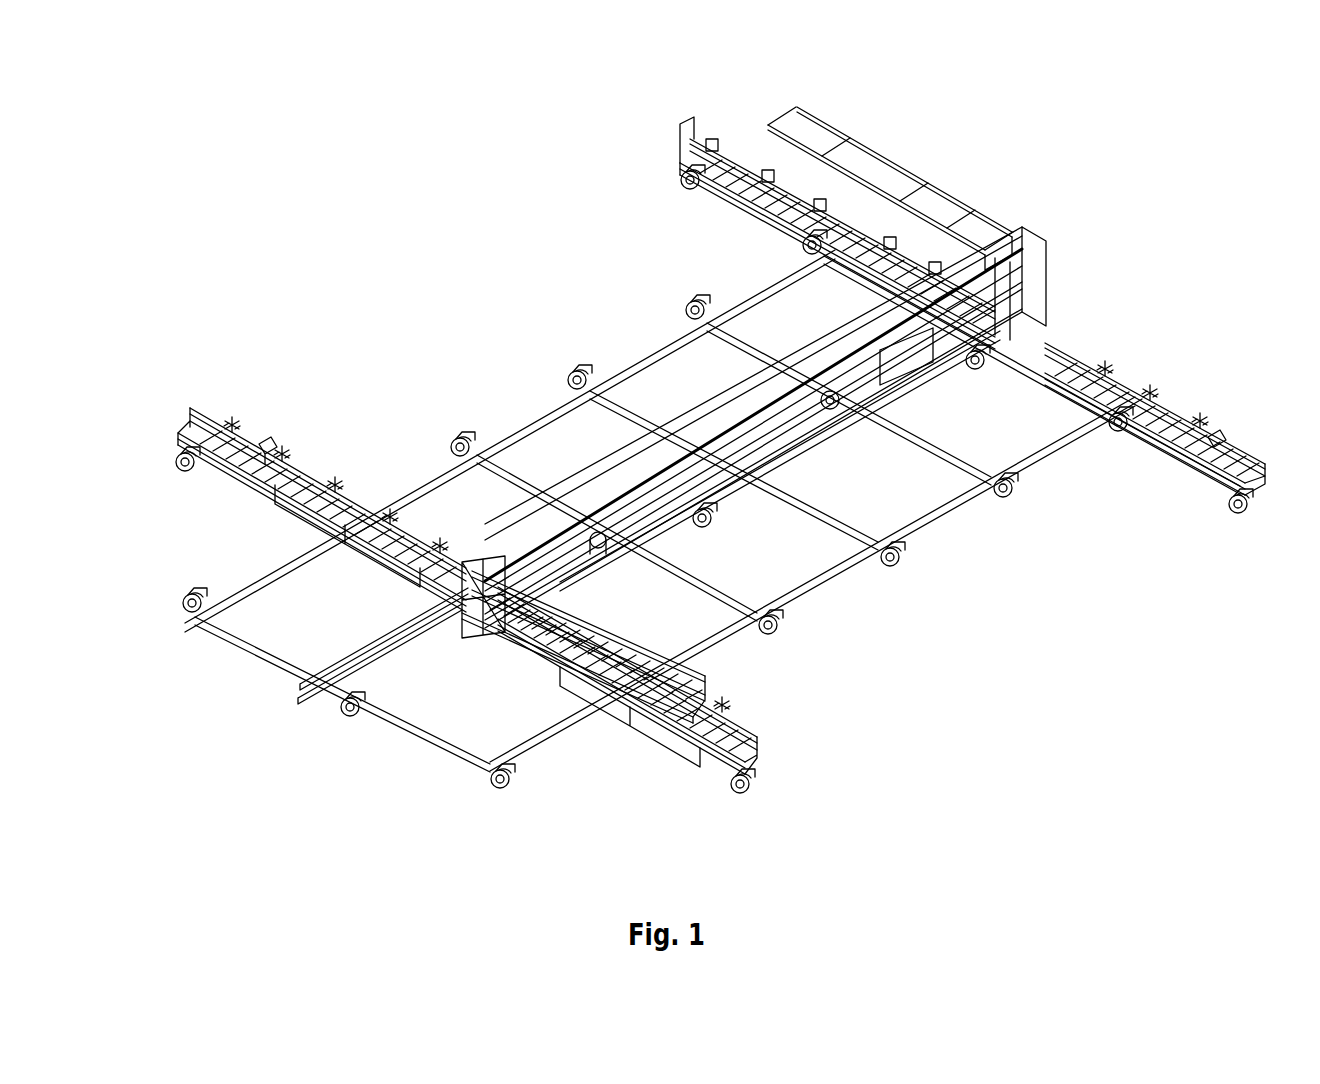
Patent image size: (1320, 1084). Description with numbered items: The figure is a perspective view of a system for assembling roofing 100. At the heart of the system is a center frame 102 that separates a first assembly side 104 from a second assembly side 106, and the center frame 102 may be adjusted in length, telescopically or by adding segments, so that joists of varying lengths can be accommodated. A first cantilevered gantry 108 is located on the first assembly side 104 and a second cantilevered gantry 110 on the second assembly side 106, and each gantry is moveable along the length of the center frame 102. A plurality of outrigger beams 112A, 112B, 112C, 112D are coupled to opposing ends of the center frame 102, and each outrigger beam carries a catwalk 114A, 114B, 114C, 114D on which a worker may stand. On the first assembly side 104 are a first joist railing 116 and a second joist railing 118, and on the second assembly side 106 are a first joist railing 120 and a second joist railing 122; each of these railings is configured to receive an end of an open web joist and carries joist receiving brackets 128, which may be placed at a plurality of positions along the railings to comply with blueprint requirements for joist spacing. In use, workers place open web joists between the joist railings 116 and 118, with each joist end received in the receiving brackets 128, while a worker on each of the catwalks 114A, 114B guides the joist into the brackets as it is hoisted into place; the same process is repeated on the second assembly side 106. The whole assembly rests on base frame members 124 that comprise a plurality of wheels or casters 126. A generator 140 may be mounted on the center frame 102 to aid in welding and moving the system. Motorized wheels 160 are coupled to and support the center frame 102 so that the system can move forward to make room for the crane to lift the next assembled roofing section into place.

The system for assembling roofing 100 is at (366, 96).
The center frame 102 is at (725, 410).
The first assembly side 104 is at (1105, 675).
The second assembly side 106 is at (408, 270).
The first cantilevered gantry 108 is at (710, 680).
The second cantilevered gantry 110 is at (862, 140).
The outrigger beam 112A is at (752, 772).
The outrigger beam 112B is at (1150, 452).
The outrigger beam 112C is at (195, 478).
The outrigger beam 112D is at (680, 152).
The catwalk 114A is at (650, 735).
The catwalk 114B is at (1178, 425).
The catwalk 114C is at (192, 437).
The catwalk 114D is at (716, 172).
The first joist railing 116 is at (722, 712).
The second joist railing 118 is at (1215, 432).
The first joist railing 120 is at (266, 450).
The second joist railing 122 is at (687, 122).
The base frame members 124 is at (450, 460).
The wheels 126 is at (572, 372).
The joist receiving brackets 128 is at (234, 424).
The generator 140 is at (905, 357).
The motorized-wheel 160 is at (828, 385).